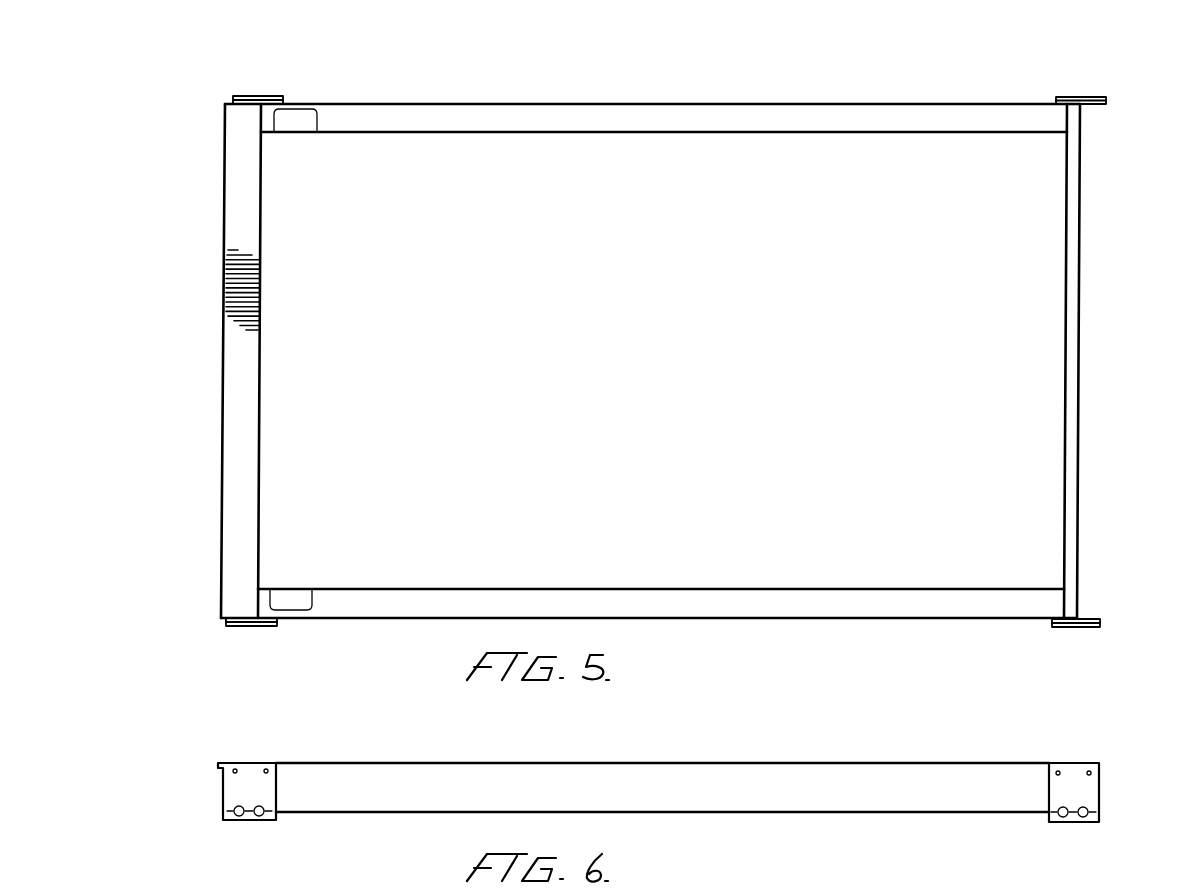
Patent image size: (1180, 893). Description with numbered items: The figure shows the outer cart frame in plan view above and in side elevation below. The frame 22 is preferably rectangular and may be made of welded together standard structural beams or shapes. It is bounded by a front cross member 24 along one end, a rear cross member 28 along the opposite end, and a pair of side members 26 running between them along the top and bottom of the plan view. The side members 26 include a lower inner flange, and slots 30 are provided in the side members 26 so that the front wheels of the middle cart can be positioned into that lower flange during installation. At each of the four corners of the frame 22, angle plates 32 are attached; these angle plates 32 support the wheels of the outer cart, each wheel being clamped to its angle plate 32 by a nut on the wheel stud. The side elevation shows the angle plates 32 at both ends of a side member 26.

In FIG. 5, the frame 22 is at (634, 359).
In FIG. 5, the left side member 24 is at (238, 218).
In FIG. 5, the cross rail 26 is at (555, 115).
In FIG. 5, the right side member 28 is at (1073, 191).
In FIG. 5, the corner lug 30 is at (293, 589).
In FIG. 5, the mounting plate / end cap 32 is at (1078, 100).
In FIG. 6, the mounting plate / end cap 32 is at (236, 792).